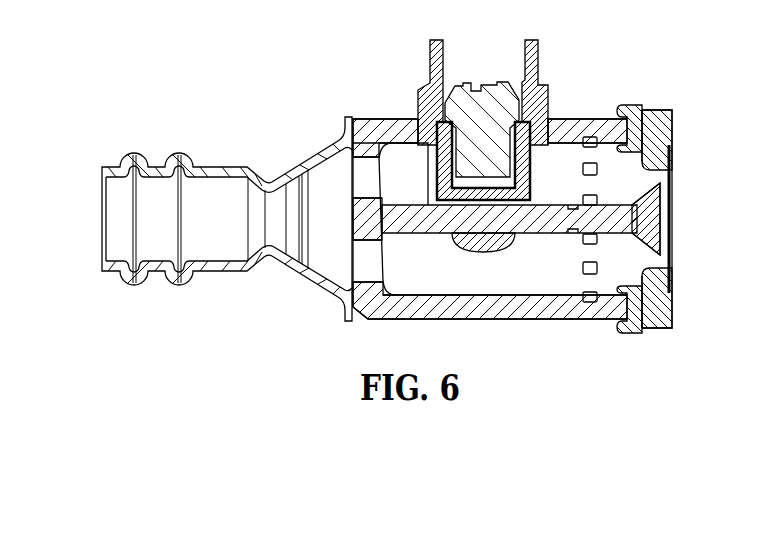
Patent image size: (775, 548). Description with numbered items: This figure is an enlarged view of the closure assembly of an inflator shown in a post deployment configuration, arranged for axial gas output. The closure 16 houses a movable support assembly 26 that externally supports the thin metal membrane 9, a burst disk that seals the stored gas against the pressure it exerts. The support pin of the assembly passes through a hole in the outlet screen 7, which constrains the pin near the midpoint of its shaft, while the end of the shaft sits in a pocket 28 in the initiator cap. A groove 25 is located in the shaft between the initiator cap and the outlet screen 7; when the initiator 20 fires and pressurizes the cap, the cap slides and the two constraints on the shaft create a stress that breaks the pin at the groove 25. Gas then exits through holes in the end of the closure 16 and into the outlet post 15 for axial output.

The outlet post 15 is at (294, 172).
The initiator 20 is at (437, 89).
The closure 16 is at (587, 130).
The outlet screen 7 is at (597, 172).
The thin metal membrane 9 is at (673, 238).
The movable support assembly 26 is at (429, 249).
The pocket 28 is at (482, 246).
The groove 25 is at (570, 236).